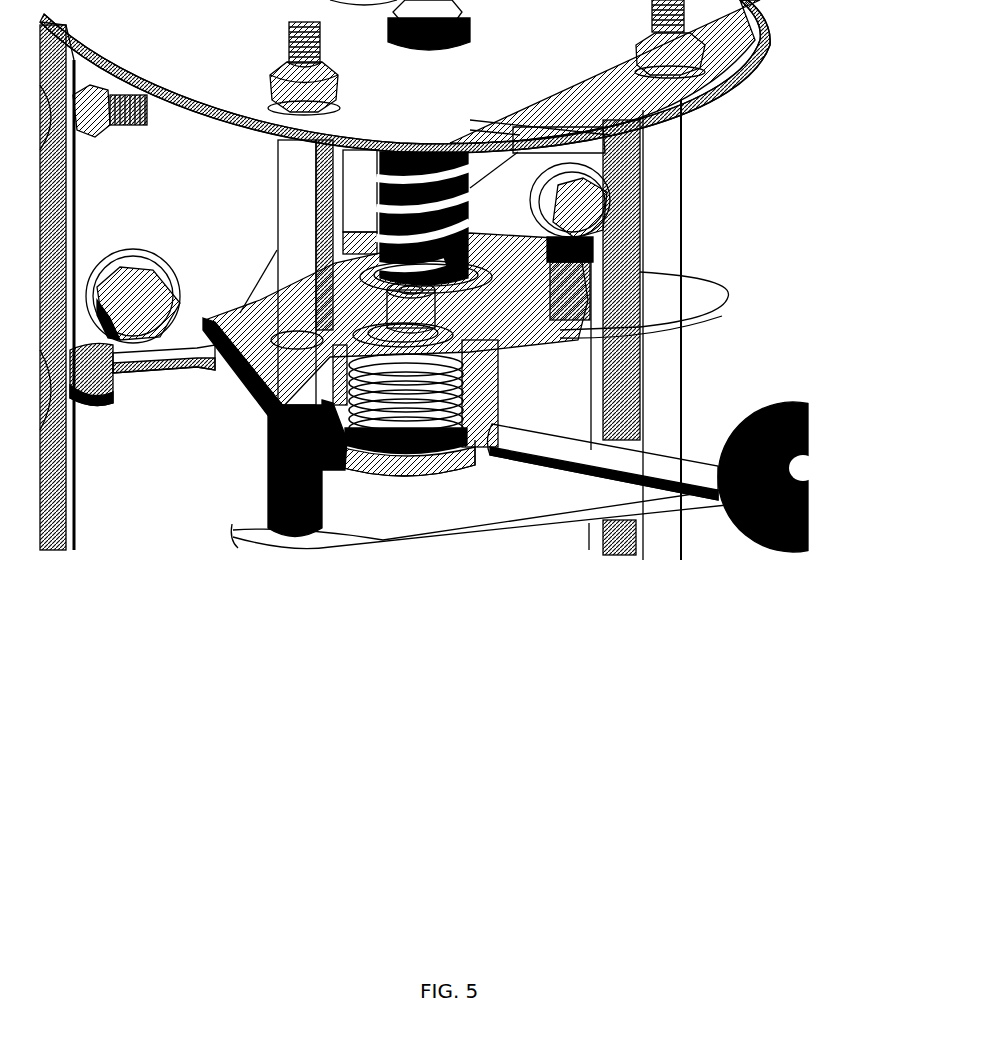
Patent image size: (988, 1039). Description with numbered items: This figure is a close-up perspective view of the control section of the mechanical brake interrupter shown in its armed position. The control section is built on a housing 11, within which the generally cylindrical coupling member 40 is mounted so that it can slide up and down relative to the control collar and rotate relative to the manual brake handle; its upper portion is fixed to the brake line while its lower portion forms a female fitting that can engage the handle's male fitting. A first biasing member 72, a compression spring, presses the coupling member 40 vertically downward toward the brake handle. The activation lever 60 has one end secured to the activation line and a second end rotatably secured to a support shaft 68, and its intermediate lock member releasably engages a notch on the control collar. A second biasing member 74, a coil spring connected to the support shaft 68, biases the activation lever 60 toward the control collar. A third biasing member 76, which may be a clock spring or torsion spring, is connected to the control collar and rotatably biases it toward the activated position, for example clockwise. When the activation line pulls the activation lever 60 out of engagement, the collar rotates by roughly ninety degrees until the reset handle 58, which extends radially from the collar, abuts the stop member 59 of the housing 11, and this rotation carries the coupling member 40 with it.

The housing 11 is at (680, 88).
The first biasing member 72 is at (470, 186).
The coupling member 40 is at (605, 260).
The third biasing member 76 is at (530, 350).
The activation lever 60 is at (231, 376).
The stop member 59 is at (270, 440).
The support shaft 68 is at (400, 380).
The second biasing member 74 is at (445, 420).
The reset handle 58 is at (690, 500).